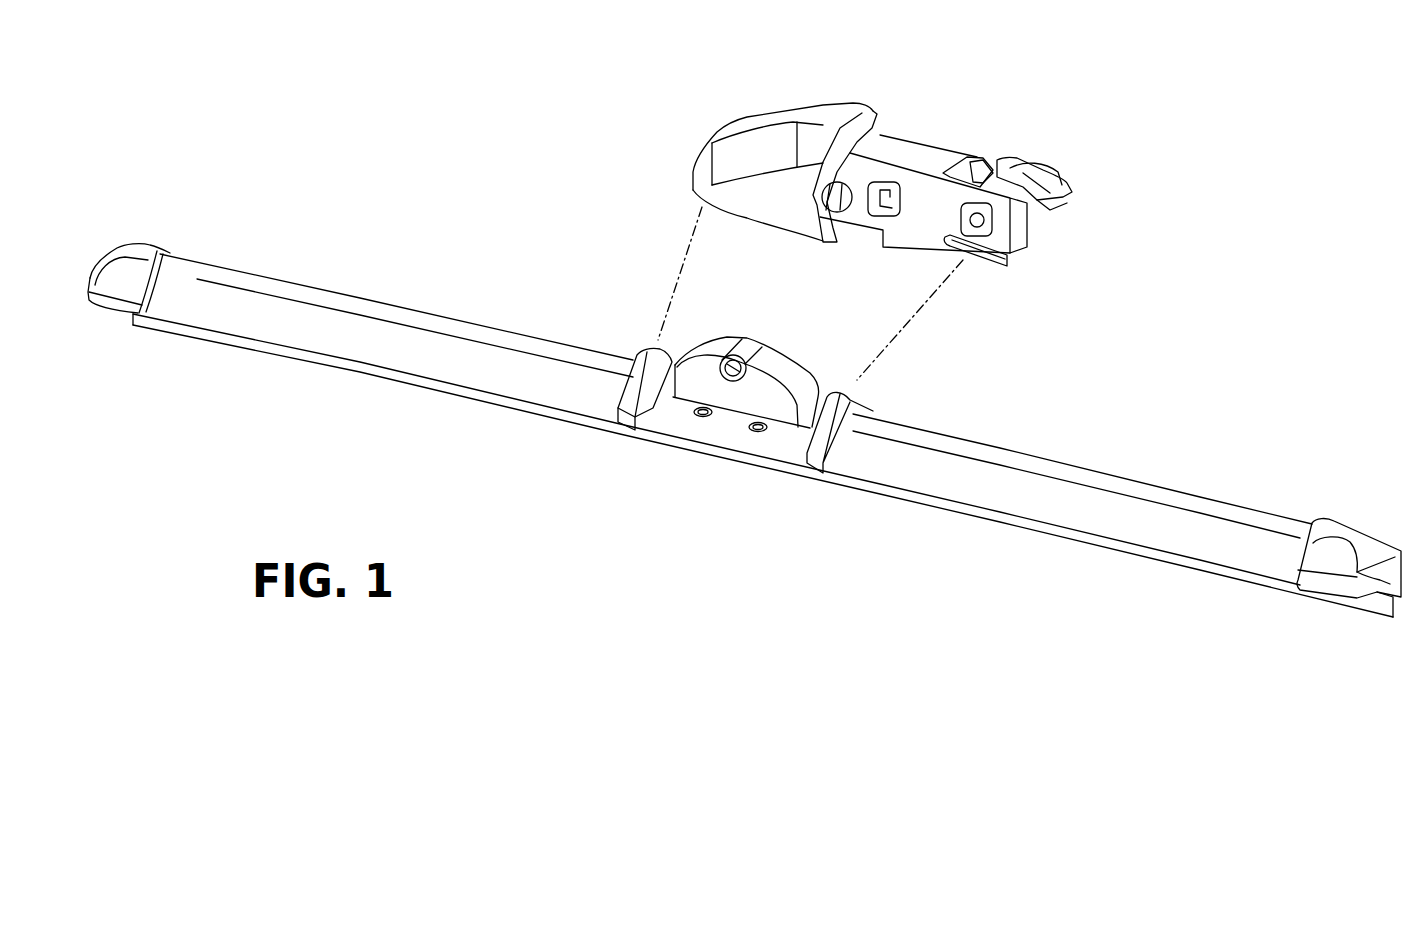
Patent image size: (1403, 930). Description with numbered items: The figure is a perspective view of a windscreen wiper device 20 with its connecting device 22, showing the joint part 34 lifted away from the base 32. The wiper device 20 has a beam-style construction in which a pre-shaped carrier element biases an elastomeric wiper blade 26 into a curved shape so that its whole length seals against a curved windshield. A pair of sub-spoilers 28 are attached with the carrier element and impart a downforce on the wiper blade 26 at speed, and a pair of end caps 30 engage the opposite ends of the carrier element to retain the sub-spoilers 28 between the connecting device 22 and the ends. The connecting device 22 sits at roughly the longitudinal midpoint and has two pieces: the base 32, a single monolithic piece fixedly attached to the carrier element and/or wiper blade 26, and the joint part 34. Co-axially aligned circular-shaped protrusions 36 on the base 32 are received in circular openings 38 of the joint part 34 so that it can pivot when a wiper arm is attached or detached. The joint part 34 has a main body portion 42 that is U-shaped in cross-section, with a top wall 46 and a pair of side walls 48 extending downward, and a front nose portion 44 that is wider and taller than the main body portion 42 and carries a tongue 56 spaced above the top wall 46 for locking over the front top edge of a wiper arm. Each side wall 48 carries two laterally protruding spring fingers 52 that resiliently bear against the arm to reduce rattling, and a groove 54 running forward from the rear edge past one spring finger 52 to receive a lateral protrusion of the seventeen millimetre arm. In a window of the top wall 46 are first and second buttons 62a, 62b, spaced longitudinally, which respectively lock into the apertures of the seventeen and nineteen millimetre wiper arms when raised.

The windscreen wiper device 20 is at (355, 114).
The connecting device 22 is at (910, 415).
The wiper blade 26 is at (900, 500).
The sub-spoilers 28 is at (432, 325).
The end caps 30 is at (140, 248).
The base 32 is at (730, 445).
The joint part 34 is at (1036, 131).
The protrusions 36 is at (722, 362).
The circular openings 38 is at (833, 200).
The main body portion 42 is at (972, 94).
The front nose portion 44 is at (752, 112).
The top wall 46 is at (918, 148).
The side walls 48 is at (930, 232).
The spring fingers 52 is at (868, 238).
The groove 54 is at (973, 245).
The tongue 56 is at (876, 112).
The first button 62a is at (980, 160).
The second button 62b is at (1040, 165).